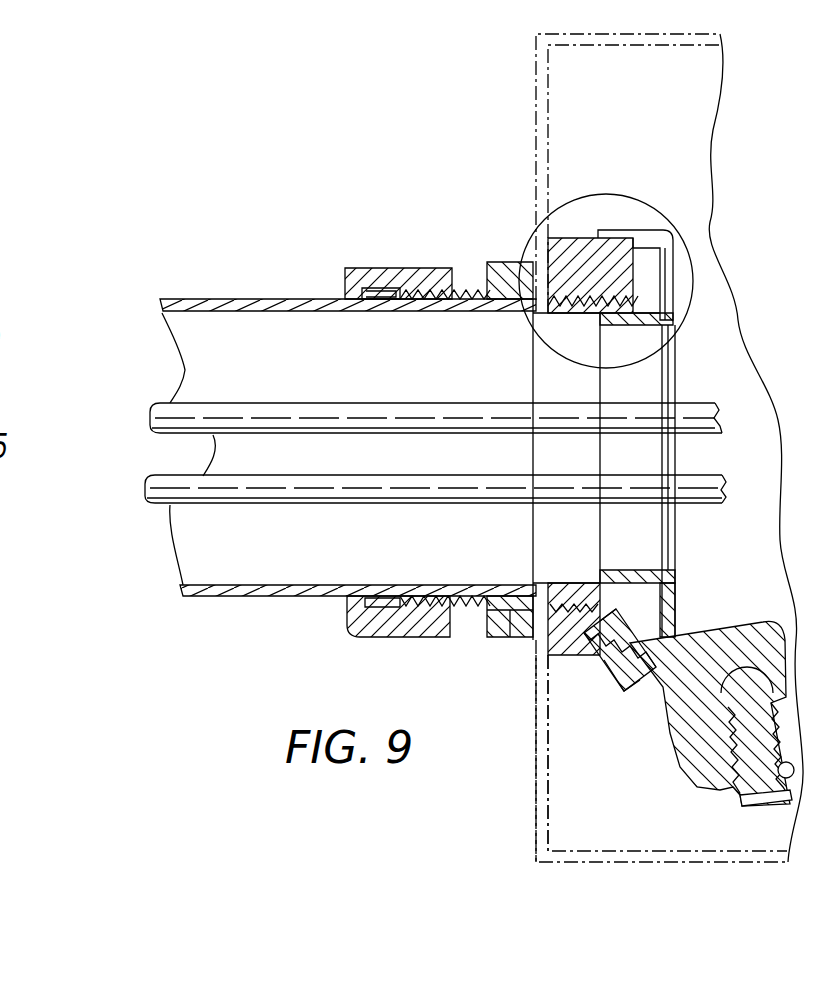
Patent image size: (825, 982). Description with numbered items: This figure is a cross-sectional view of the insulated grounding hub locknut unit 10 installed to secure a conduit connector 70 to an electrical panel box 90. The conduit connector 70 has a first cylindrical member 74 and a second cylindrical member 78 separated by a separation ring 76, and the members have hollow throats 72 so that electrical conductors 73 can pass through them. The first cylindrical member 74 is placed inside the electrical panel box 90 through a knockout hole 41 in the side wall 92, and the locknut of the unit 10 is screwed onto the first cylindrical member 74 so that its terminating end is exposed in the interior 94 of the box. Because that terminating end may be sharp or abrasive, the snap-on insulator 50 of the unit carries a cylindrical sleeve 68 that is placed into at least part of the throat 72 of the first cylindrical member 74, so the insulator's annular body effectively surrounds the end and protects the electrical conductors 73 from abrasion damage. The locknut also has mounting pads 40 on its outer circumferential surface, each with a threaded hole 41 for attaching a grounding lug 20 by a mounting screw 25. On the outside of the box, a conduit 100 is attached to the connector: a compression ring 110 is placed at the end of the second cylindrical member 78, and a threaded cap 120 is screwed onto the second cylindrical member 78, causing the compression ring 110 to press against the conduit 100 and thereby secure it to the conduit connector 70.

The insulated grounding hub locknut unit 10 is at (672, 222).
The grounding lug 20 is at (758, 625).
The mounting screw 25 is at (610, 693).
The mounting pad 40 is at (548, 694).
The threaded hole 41 is at (545, 300).
The snap-on insulator 50 is at (676, 452).
The cylindrical sleeve 68 is at (636, 330).
The conduit connector 70 is at (504, 262).
The hollow throat 72 is at (578, 403).
The electrical conductors 73 is at (172, 403).
The first cylindrical member 74 is at (578, 583).
The separation ring 76 is at (497, 640).
The second cylindrical member 78 is at (438, 596).
The electrical panel box 90 is at (521, 132).
The side wall 92 is at (536, 156).
The interior 94 is at (648, 118).
The conduit 100 is at (283, 299).
The compression ring 110 is at (385, 311).
The threaded cap 120 is at (410, 268).